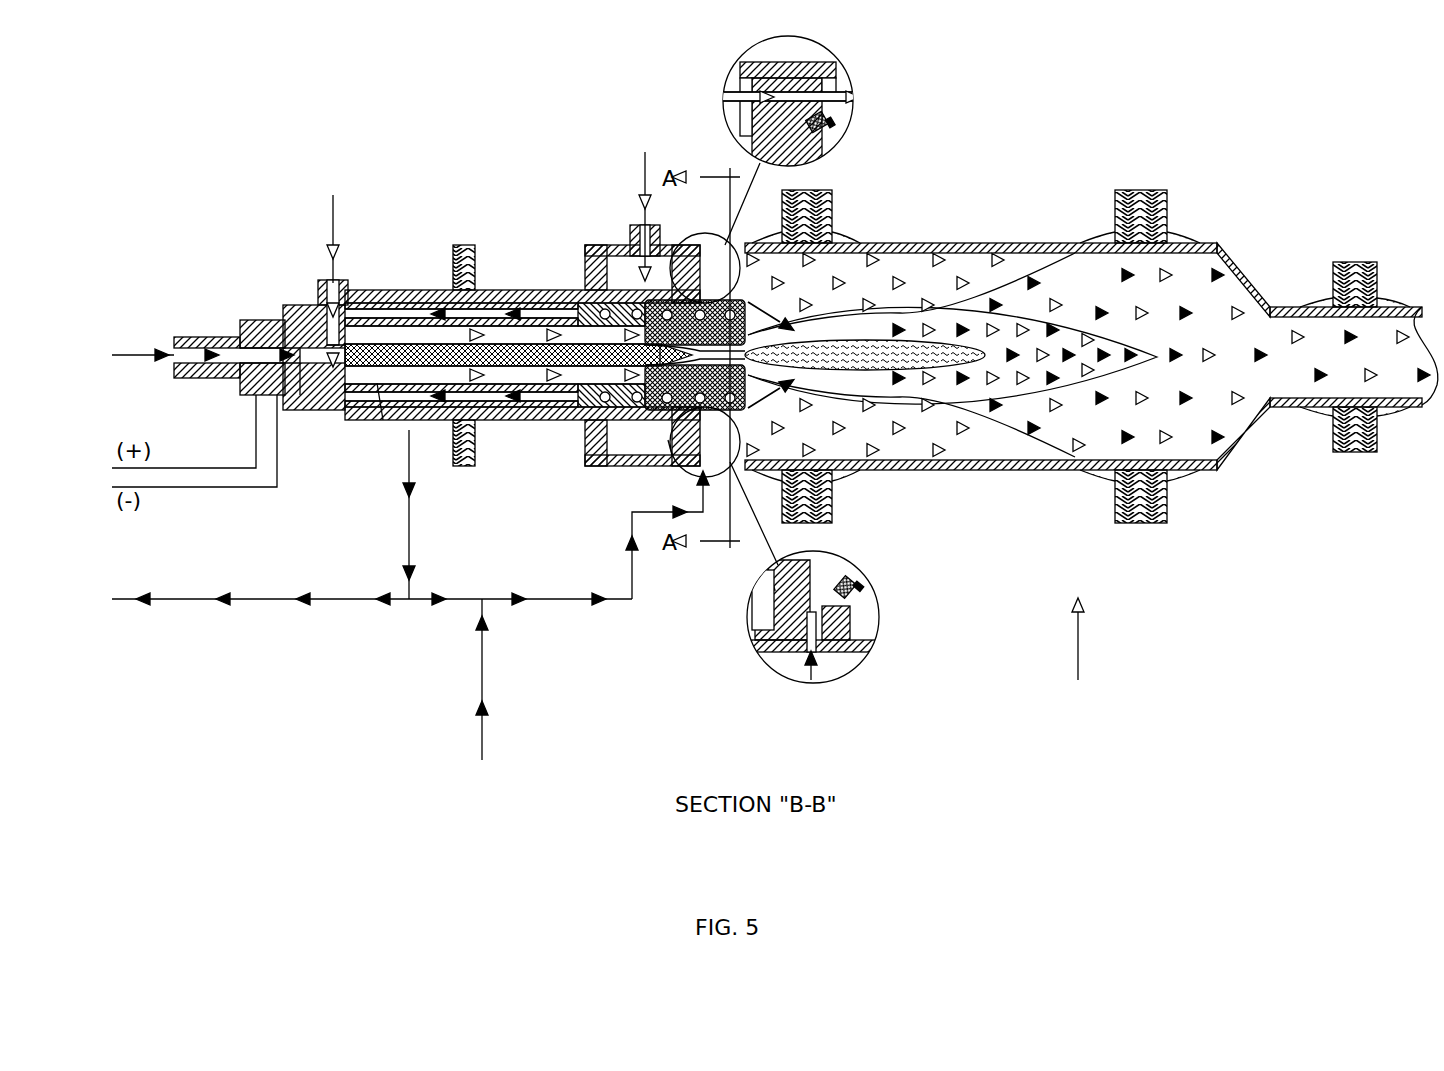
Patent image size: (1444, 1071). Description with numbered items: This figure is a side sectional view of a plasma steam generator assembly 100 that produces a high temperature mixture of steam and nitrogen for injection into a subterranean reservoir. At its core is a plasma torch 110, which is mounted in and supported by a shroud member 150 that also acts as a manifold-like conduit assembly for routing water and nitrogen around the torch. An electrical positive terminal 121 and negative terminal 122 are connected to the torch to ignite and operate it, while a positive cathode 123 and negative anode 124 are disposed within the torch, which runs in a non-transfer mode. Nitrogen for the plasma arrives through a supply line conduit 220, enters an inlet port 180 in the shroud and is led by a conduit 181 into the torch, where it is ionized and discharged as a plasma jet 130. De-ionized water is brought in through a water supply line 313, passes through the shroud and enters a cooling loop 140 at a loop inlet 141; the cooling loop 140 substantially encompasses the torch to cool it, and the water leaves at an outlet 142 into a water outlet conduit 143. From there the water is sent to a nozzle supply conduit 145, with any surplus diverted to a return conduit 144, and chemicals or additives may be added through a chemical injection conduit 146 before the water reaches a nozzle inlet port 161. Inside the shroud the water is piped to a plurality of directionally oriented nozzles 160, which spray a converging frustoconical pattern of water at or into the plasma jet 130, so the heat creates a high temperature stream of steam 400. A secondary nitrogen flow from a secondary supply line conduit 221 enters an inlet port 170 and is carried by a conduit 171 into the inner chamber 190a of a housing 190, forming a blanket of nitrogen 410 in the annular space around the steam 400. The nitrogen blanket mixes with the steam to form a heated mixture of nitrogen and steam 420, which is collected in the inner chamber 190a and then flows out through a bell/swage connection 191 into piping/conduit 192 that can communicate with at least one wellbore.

The plasma steam generator assembly 100 is at (1078, 677).
The plasma torch 110 is at (430, 310).
The electrical positive terminal 121 is at (202, 467).
The negative terminal 122 is at (200, 490).
The positive cathode 123 is at (468, 287).
The negative anode 124 is at (668, 440).
The plasma jet 130 is at (840, 355).
The cooling loop 140 is at (725, 242).
The loop inlet 141 is at (567, 288).
The outlet 142 is at (572, 432).
The water outlet conduit 143 is at (408, 508).
The return conduit 144 is at (170, 602).
The nozzle supply conduit 145 is at (632, 583).
The chemical injection conduit 146 is at (482, 697).
The shroud member 150 is at (525, 428).
The nozzles 160 is at (832, 132).
The nozzle inlet port 161 is at (833, 650).
The inlet port 170 is at (633, 223).
The conduit 171 is at (800, 87).
The inlet port 180 is at (318, 280).
The conduit 181 is at (377, 383).
The housing 190 is at (987, 247).
The inner chamber 190a is at (1188, 357).
The bell/swage connection 191 is at (1250, 280).
The piping/conduit 192 is at (1373, 262).
The supply line conduit 220 is at (329, 202).
The secondary supply line conduit 221 is at (640, 172).
The water supply line 313 is at (167, 340).
The stream of steam 400 is at (1053, 357).
The blanket of nitrogen 410 is at (937, 277).
The mixture of nitrogen and steam 420 is at (1102, 437).